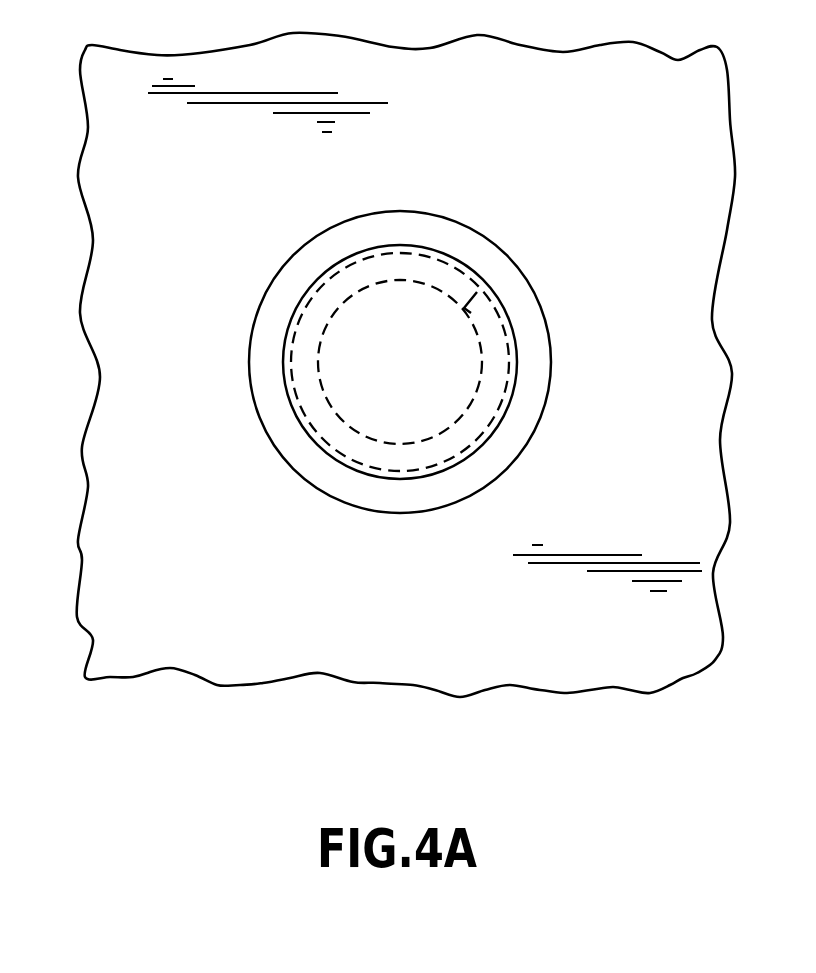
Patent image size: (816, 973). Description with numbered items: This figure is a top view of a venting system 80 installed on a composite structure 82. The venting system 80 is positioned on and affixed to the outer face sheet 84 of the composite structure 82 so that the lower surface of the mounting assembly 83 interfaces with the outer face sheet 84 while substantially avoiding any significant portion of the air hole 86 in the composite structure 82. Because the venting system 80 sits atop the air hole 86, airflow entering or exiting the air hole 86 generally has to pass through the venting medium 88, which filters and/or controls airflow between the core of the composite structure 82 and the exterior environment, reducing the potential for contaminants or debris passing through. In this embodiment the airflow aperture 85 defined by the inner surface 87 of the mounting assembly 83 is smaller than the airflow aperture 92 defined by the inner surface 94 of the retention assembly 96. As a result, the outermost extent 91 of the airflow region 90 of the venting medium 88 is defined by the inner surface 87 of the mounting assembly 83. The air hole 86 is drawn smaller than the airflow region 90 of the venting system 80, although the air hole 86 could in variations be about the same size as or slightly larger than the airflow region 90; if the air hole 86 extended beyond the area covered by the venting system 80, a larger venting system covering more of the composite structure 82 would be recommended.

The venting system 80 is at (504, 203).
The composite structure 82 is at (300, 683).
The mounting assembly 83 is at (296, 320).
The outer face sheet 84 is at (225, 605).
The airflow aperture 85 is at (411, 455).
The air hole 86 is at (483, 292).
The inner surface 87 is at (328, 276).
The venting medium 88 is at (495, 347).
The airflow region 90 is at (313, 408).
The outermost extent 91 is at (319, 287).
The airflow aperture 92 is at (350, 461).
The inner surface 94 is at (492, 432).
The retention assembly 96 is at (498, 457).